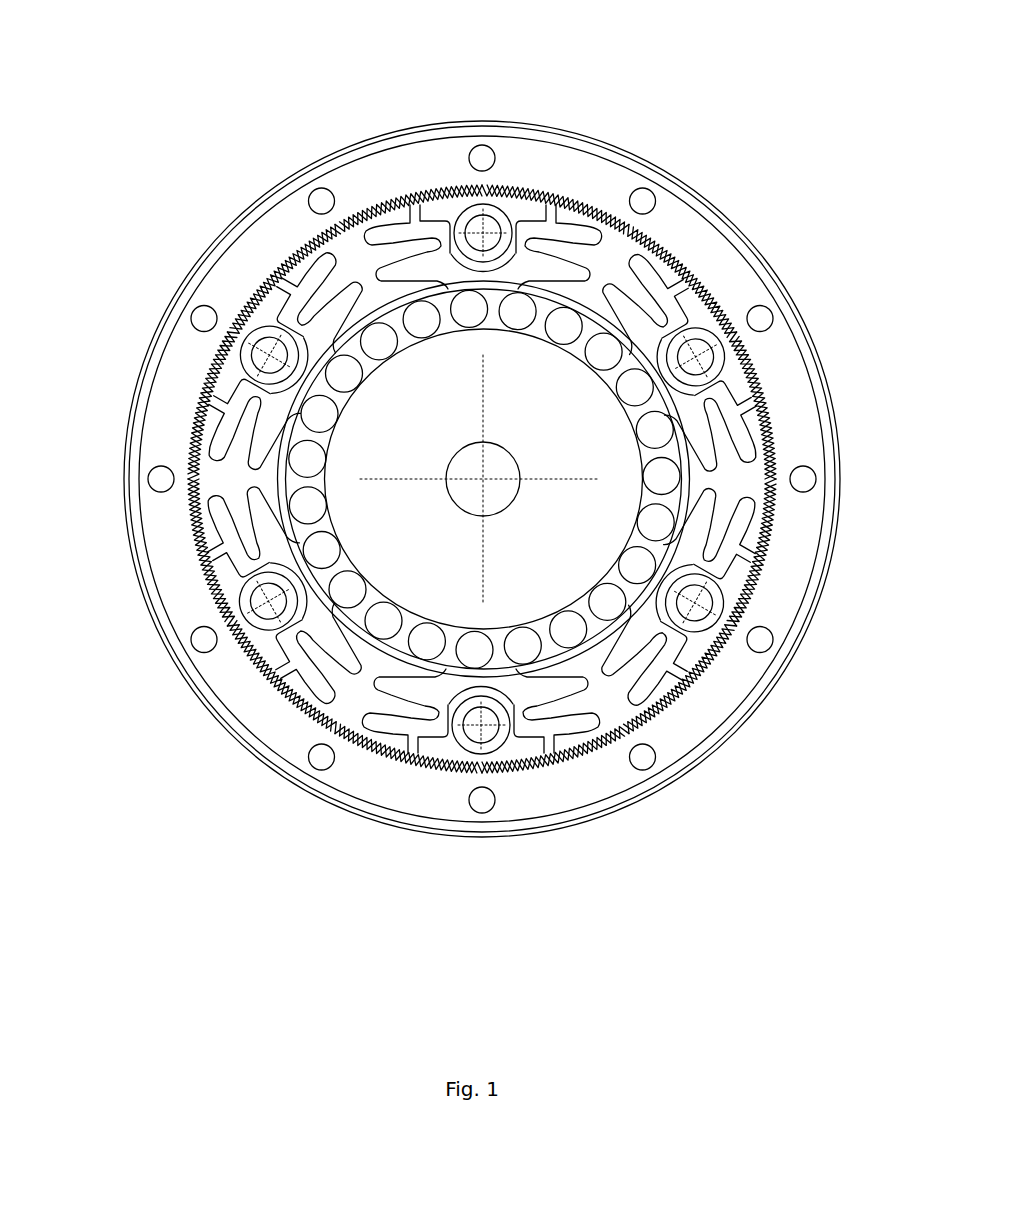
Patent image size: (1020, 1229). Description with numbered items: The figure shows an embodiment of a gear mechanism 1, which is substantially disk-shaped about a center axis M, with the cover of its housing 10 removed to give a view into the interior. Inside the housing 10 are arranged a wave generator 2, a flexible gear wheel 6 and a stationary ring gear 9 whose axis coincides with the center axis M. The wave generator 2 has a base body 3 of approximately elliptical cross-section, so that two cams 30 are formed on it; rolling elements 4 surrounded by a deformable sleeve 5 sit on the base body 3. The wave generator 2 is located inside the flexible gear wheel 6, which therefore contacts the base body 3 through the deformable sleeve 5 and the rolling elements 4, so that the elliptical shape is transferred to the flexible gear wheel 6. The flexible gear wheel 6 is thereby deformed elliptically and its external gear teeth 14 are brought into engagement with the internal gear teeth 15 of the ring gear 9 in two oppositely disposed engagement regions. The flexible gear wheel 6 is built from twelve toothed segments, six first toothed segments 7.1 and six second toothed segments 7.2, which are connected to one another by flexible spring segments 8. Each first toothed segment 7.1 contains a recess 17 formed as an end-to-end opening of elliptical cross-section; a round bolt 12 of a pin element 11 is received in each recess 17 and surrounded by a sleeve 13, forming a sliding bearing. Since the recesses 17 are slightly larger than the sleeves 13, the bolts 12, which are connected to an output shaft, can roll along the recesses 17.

The gear mechanism 1 is at (810, 114).
The wave generator 2 is at (680, 402).
The base body 3 is at (465, 618).
The rolling elements 4 is at (333, 418).
The deformable sleeve 5 is at (446, 482).
The flexible gear wheel 6 is at (654, 262).
The first toothed segments 7.1 is at (530, 198).
The second toothed segments 7.2 is at (568, 214).
The flexible spring segments 8 is at (615, 705).
The stationary ring gear 9 is at (783, 355).
The housing 10 is at (287, 177).
The pin element 11 is at (482, 479).
The bolt 12 is at (757, 658).
The sleeve 13 is at (728, 668).
The external gear teeth 14 is at (447, 205).
The internal gear teeth 15 is at (373, 198).
The recess 17 is at (770, 622).
The cams 30 is at (320, 452).
The center axis M is at (410, 487).